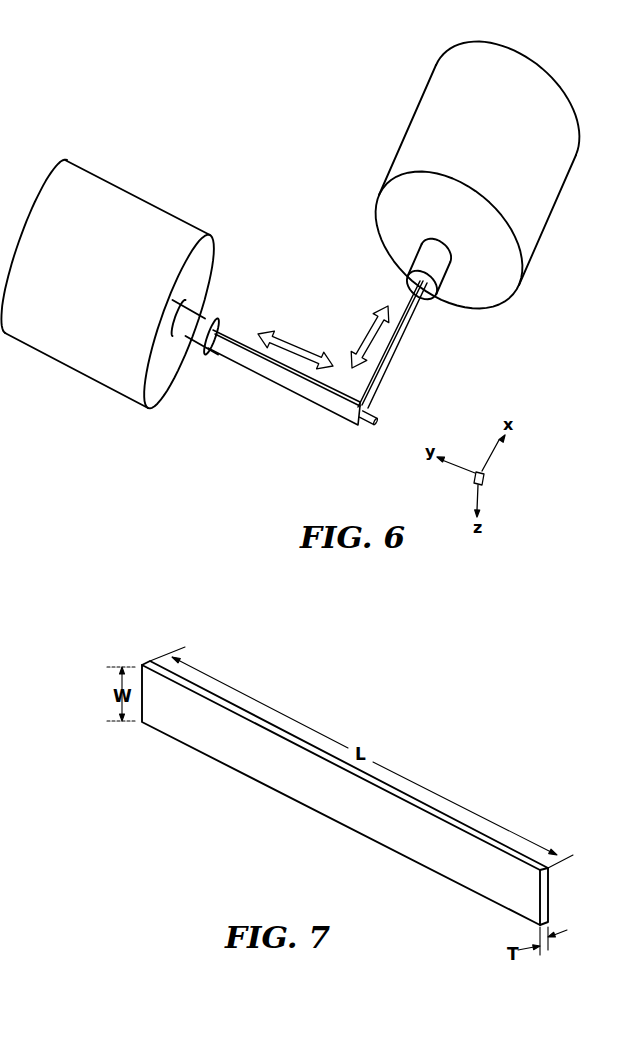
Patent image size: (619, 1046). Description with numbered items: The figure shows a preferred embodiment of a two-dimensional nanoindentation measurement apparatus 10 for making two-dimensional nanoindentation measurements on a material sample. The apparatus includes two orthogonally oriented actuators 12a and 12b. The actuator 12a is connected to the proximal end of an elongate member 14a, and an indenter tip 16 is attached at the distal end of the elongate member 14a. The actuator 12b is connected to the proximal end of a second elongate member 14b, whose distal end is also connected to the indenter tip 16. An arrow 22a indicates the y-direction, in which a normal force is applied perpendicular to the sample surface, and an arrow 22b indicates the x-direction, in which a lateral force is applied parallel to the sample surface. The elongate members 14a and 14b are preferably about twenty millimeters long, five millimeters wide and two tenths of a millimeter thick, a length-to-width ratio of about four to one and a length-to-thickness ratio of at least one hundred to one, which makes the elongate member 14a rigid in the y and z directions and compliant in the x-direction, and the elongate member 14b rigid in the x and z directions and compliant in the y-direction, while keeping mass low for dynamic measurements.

In FIG. 6, the two-dimensional nanoindentation measurement apparatus 10 is at (218, 110).
In FIG. 6, the actuator 12a is at (108, 218).
In FIG. 6, the actuator 12b is at (443, 113).
In FIG. 6, the elongate member 14a is at (277, 375).
In FIG. 7, the elongate member 14a is at (331, 793).
In FIG. 6, the elongate member 14b is at (397, 352).
In FIG. 7, the elongate member 14b is at (238, 815).
In FIG. 6, the indenter tip 16 is at (366, 418).
In FIG. 6, the arrow 22a is at (297, 342).
In FIG. 6, the arrow 22b is at (370, 322).